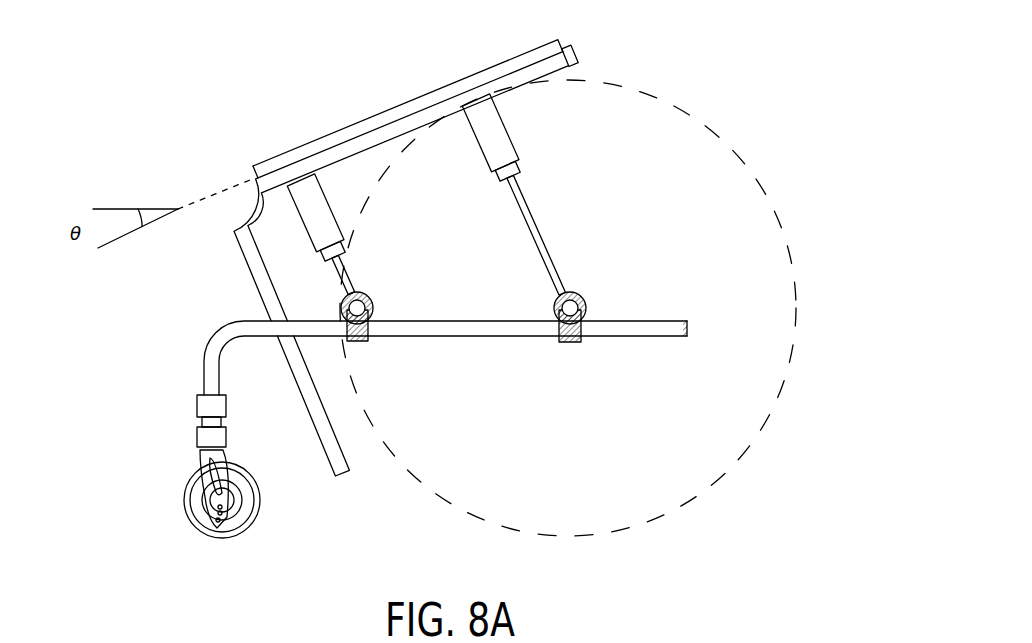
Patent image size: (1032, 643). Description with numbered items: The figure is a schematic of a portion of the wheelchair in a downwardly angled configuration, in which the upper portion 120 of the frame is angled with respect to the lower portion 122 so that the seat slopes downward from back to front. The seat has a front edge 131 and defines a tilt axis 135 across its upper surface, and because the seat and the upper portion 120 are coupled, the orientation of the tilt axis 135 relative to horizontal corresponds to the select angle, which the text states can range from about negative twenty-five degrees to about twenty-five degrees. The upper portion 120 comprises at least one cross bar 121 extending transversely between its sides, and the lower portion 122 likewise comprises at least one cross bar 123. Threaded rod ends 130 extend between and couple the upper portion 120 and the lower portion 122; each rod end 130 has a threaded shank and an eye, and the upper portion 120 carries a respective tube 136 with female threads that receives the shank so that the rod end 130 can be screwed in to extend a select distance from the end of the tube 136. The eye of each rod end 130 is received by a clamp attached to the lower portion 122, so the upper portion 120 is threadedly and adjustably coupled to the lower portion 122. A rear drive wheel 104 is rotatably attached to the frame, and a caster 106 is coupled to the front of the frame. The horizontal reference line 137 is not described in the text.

The rear drive wheel 104 is at (795, 326).
The caster 106 is at (196, 437).
The upper portion of the frame 120 is at (441, 321).
The cross bar 121 is at (411, 100).
The lower portion of the frame 122 is at (312, 319).
The cross bar 123 is at (562, 37).
The threaded rod end 130 is at (356, 289).
The front edge 131 is at (253, 167).
The tilt axis 135 is at (122, 239).
The tube 136 is at (340, 227).
The horizontal reference line 137 is at (128, 207).